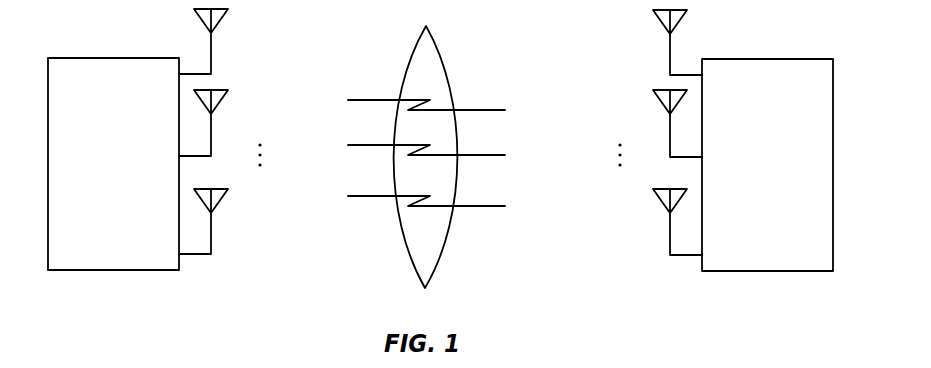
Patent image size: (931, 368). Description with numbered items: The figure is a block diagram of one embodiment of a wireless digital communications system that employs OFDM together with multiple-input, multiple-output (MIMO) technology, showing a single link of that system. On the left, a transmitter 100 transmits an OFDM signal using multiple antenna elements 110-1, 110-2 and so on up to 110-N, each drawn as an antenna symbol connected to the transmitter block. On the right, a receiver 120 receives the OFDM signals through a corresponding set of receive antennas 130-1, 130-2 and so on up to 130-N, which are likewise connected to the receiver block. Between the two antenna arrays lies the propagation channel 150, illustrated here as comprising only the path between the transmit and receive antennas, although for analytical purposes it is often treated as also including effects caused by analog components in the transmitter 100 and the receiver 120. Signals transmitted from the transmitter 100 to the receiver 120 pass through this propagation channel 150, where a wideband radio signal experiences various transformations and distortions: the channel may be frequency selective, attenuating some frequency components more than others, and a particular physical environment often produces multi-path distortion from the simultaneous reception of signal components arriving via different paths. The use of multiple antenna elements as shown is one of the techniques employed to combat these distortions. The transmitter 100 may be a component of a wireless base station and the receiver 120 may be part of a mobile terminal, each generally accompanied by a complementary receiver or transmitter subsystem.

The transmitter 100 is at (97, 58).
The antenna element 110-1 is at (224, 14).
The antenna element 110-2 is at (224, 95).
The antenna element 110-N is at (224, 194).
The propagation channel 150 is at (437, 43).
The receiver 120 is at (785, 59).
The receive antenna 130-1 is at (656, 15).
The receive antenna 130-2 is at (656, 96).
The receive antenna 130-N is at (656, 196).